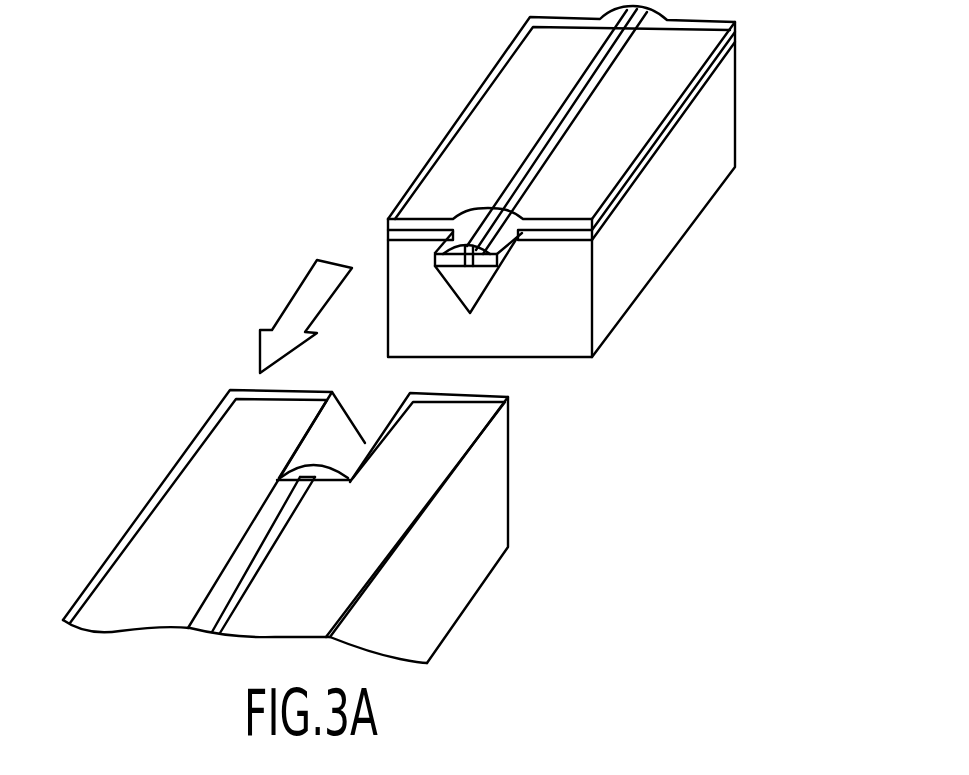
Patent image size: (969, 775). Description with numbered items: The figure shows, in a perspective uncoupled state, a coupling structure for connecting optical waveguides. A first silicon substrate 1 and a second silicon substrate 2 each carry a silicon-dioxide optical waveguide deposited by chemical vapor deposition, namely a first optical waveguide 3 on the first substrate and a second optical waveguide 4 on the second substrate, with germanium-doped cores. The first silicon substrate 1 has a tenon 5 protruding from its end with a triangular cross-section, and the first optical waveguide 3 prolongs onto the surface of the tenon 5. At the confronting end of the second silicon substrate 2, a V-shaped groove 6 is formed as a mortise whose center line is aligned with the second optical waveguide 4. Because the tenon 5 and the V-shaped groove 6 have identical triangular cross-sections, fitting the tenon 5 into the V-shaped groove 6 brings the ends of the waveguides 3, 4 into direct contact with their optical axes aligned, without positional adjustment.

The first silicon substrate 1 is at (495, 104).
The second silicon substrate 2 is at (495, 462).
The first optical waveguide 3 is at (527, 157).
The second optical waveguide 4 is at (280, 537).
The tenon 5 is at (500, 267).
The V-shaped groove 6 is at (317, 445).